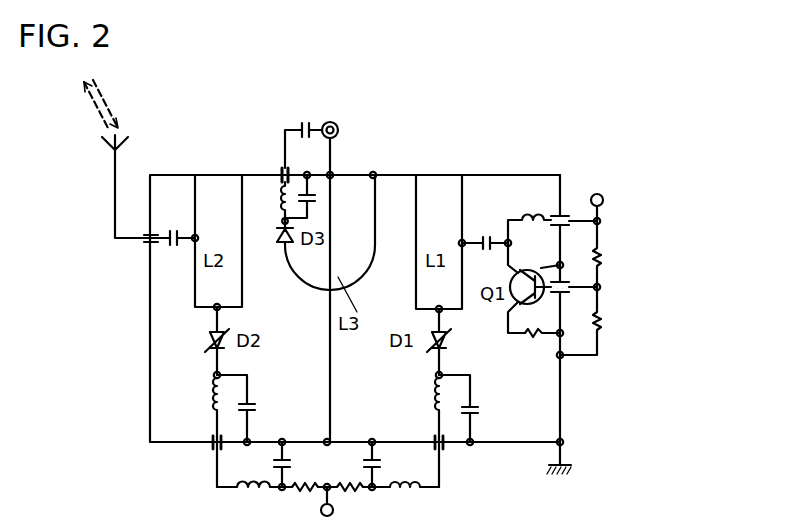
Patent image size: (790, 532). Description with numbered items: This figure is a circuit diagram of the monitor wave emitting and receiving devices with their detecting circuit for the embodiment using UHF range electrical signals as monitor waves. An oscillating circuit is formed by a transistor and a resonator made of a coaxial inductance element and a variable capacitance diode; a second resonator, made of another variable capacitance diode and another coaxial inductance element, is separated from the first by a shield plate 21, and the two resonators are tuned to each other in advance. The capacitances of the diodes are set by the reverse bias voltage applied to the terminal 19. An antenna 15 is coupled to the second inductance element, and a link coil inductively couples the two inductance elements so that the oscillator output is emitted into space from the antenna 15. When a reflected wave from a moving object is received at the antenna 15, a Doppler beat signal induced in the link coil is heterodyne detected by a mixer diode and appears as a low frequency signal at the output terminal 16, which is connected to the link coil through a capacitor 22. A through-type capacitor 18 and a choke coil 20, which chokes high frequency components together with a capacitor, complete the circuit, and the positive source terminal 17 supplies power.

The antenna 15 is at (108, 145).
The output terminal 16 is at (338, 126).
The positive source terminal 17 is at (603, 197).
The through-type capacitor 18 is at (281, 170).
The terminal 19 is at (334, 513).
The choke coil 20 is at (282, 201).
The shield plate 21 is at (331, 370).
The capacitor 22 is at (301, 126).